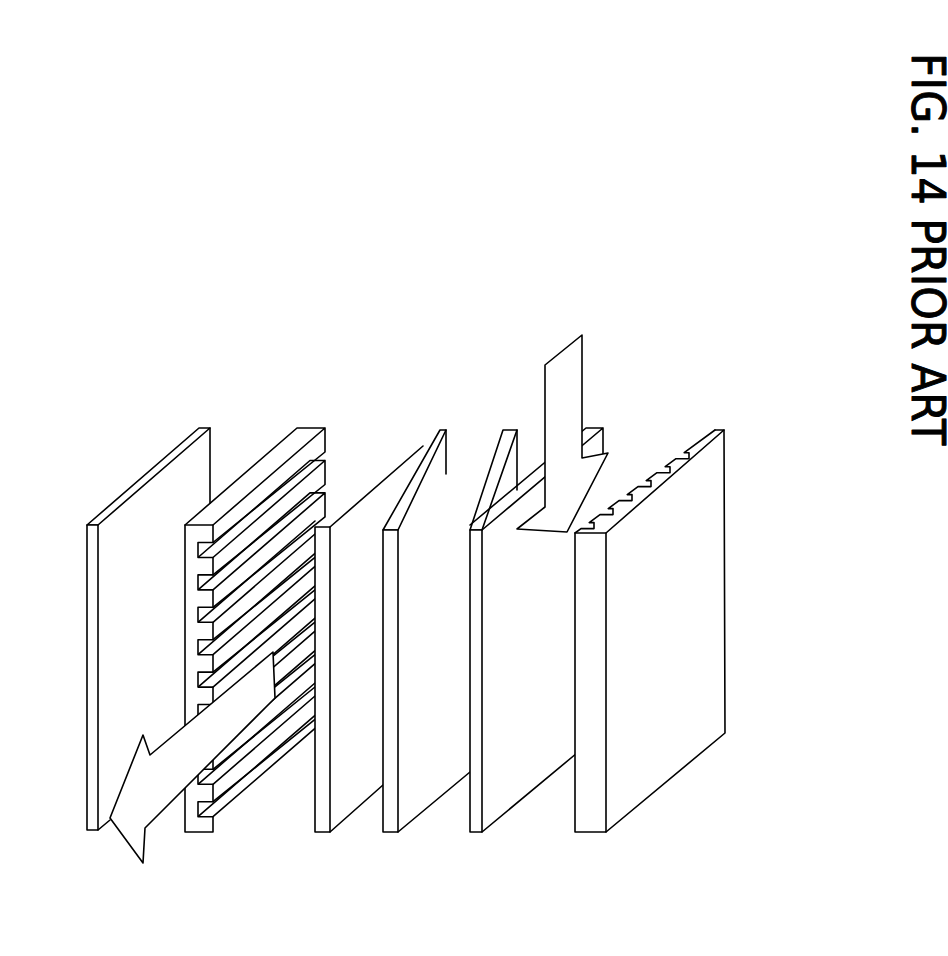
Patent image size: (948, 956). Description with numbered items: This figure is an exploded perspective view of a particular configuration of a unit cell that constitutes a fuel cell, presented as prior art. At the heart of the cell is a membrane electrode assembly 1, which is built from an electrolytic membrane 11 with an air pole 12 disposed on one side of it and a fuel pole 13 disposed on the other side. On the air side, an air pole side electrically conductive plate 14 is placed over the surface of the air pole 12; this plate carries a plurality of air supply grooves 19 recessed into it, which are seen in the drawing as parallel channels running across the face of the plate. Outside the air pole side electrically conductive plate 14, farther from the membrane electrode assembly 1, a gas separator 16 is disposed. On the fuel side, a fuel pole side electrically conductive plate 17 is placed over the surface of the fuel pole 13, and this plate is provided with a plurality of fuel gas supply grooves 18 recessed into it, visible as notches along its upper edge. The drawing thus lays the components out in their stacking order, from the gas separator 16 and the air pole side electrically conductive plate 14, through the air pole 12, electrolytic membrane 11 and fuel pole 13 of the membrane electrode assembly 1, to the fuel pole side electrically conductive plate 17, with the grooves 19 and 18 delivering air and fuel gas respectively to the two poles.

The membrane electrode assembly 1 is at (493, 587).
The electrolytic membrane 11 is at (492, 443).
The air pole 12 is at (433, 428).
The fuel pole 13 is at (536, 464).
The air pole side electrically conductive plate 14 is at (304, 611).
The gas separator 16 is at (204, 425).
The fuel pole side electrically conductive plate 17 is at (670, 601).
The fuel gas supply grooves 18 is at (670, 457).
The air supply grooves 19 is at (316, 460).